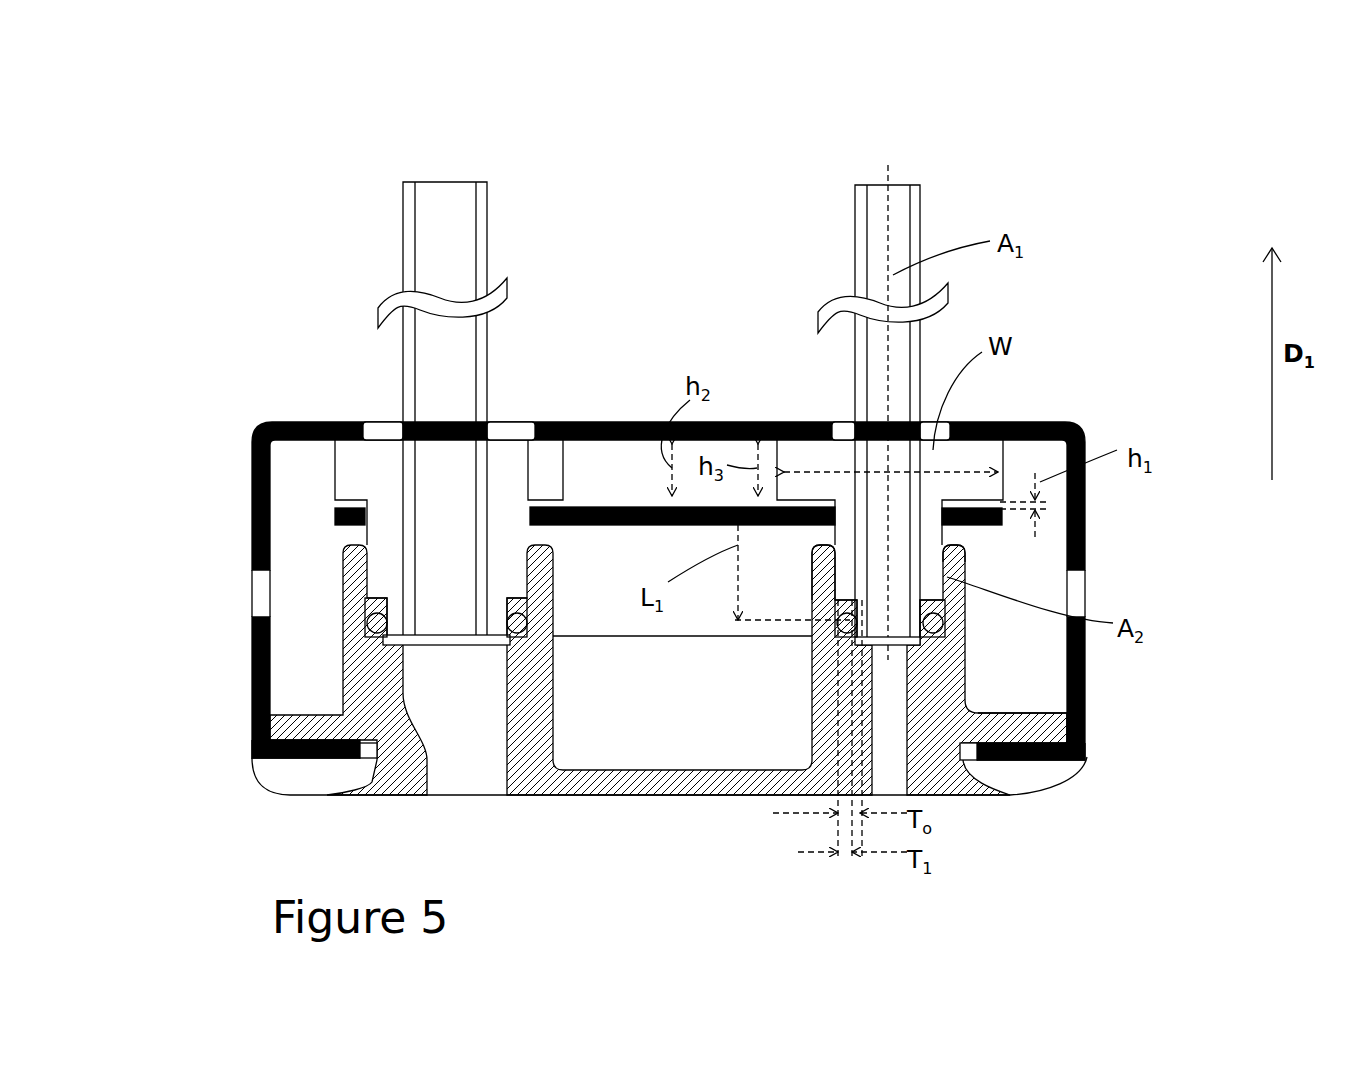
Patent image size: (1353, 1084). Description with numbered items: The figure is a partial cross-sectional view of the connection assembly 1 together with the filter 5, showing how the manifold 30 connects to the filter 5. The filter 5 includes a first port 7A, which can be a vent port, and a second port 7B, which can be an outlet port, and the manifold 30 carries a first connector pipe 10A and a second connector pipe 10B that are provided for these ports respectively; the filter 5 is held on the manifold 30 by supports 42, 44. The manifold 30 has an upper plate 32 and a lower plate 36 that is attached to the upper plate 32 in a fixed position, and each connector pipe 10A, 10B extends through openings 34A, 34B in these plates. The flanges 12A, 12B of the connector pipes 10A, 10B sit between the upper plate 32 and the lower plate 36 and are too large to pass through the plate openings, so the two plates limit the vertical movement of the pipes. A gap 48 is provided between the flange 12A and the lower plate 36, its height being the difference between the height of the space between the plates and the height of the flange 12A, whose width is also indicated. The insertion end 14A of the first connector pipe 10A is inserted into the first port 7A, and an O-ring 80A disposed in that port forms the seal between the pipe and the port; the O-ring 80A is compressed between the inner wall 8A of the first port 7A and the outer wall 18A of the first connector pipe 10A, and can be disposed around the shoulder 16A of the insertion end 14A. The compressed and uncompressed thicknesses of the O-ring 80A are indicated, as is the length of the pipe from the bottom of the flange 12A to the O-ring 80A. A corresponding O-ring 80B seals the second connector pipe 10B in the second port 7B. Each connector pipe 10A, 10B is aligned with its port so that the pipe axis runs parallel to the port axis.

The connection assembly 1 is at (140, 147).
The filter 5 is at (700, 792).
The first port 7A is at (897, 585).
The second port 7B is at (360, 602).
The inner wall 8A is at (925, 548).
The first connector pipe 10A is at (917, 237).
The second connector pipe 10B is at (488, 223).
The flange 12A is at (1002, 458).
The flange 12B is at (333, 472).
The insertion end 14A is at (830, 577).
The shoulder 16A is at (1060, 748).
The outer wall 18A is at (917, 637).
The manifold 30 is at (252, 483).
The upper plate 32 is at (330, 422).
The first opening in shell 34A is at (842, 432).
The second opening in shell 34B is at (368, 417).
The lower plate 36 is at (605, 505).
The support 42 is at (950, 615).
The support 44 is at (252, 740).
The gap 48 is at (987, 503).
The O-ring 80A is at (930, 628).
The second O-ring seal 80B is at (377, 623).